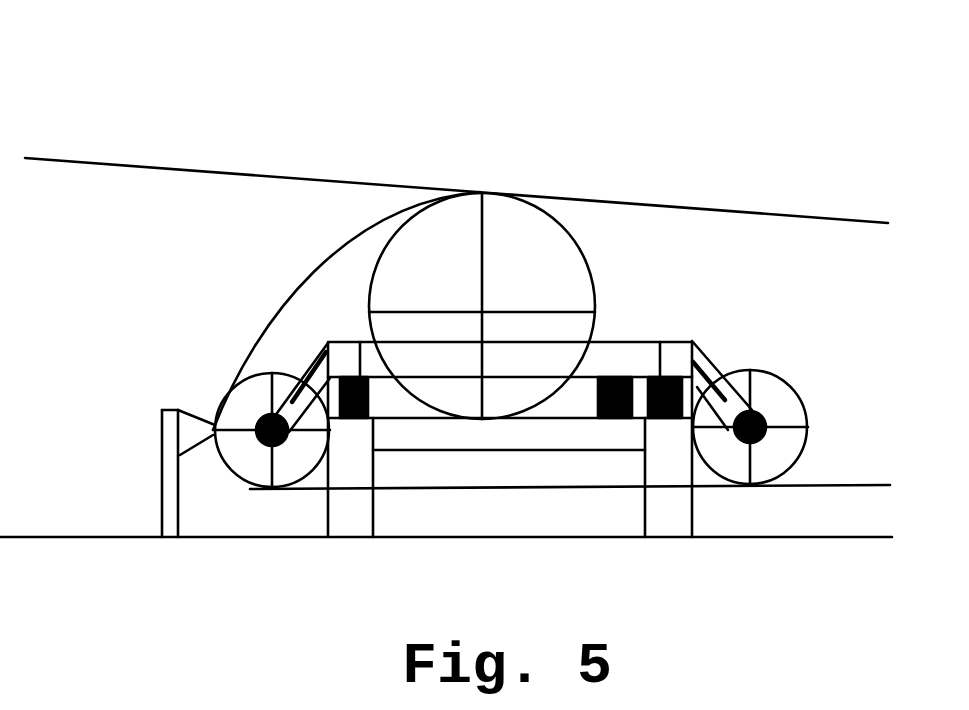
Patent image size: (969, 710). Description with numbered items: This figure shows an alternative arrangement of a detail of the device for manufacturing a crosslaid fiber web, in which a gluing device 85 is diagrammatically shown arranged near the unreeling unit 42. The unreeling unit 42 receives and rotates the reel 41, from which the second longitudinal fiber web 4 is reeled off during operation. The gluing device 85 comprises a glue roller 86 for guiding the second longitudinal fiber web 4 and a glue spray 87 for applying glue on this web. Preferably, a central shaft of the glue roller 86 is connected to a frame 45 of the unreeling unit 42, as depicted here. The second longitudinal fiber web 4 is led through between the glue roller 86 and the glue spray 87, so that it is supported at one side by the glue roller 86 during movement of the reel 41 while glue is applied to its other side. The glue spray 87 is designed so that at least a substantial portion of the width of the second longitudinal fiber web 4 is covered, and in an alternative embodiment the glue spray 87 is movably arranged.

The second longitudinal fiber web 4 is at (298, 285).
The reel 41 is at (508, 235).
The unreeling unit 42 is at (358, 146).
The frame 45 is at (620, 362).
The gluing device 85 is at (188, 372).
The glue roller 86 is at (245, 455).
The glue spray 87 is at (195, 428).